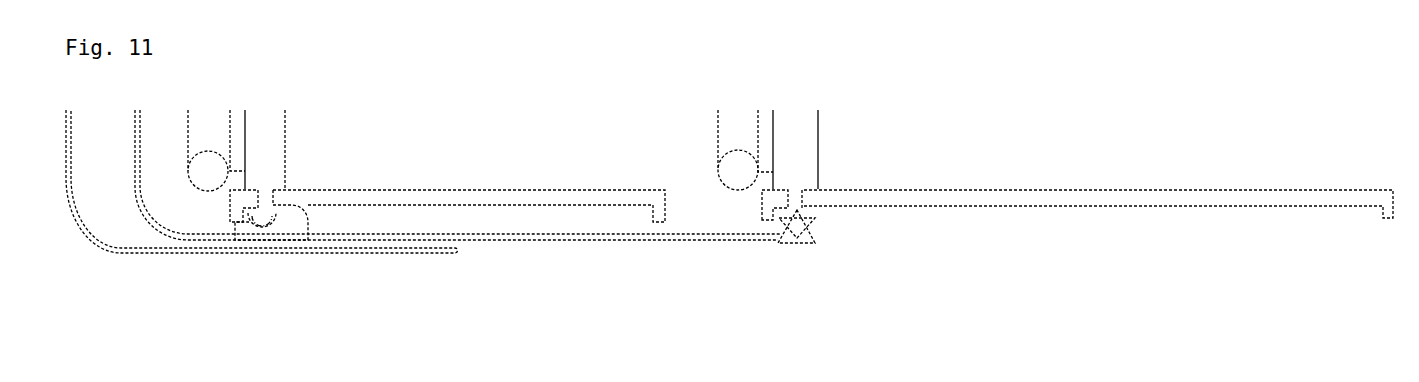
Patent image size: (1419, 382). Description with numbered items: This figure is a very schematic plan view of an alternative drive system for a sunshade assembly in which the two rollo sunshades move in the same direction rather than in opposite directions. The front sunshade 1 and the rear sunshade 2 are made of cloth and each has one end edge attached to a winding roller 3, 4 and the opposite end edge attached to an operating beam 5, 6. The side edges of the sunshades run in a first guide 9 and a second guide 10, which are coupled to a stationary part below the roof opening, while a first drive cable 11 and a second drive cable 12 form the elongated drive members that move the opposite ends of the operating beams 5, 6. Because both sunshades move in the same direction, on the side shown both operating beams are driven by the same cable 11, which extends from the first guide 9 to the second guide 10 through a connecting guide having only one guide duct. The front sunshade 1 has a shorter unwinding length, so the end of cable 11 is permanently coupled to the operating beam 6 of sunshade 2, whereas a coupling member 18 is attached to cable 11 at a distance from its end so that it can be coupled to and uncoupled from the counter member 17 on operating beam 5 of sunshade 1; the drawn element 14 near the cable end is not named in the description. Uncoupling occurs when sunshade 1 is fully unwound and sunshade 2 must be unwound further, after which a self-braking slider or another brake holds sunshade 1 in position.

The sunshade 1 is at (455, 139).
The sunshade 2 is at (1083, 119).
The winding roller 3 is at (204, 173).
The winding roller 4 is at (737, 175).
The operating beam 5 is at (266, 168).
The operating beam 6 is at (804, 165).
The first guide 9 is at (382, 201).
The second guide 10 is at (972, 201).
The first drive cable 11 is at (600, 240).
The second drive cable 12 is at (418, 253).
The locking wedge 14 is at (797, 238).
The counter member 17 is at (268, 215).
The coupling member 18 is at (290, 236).